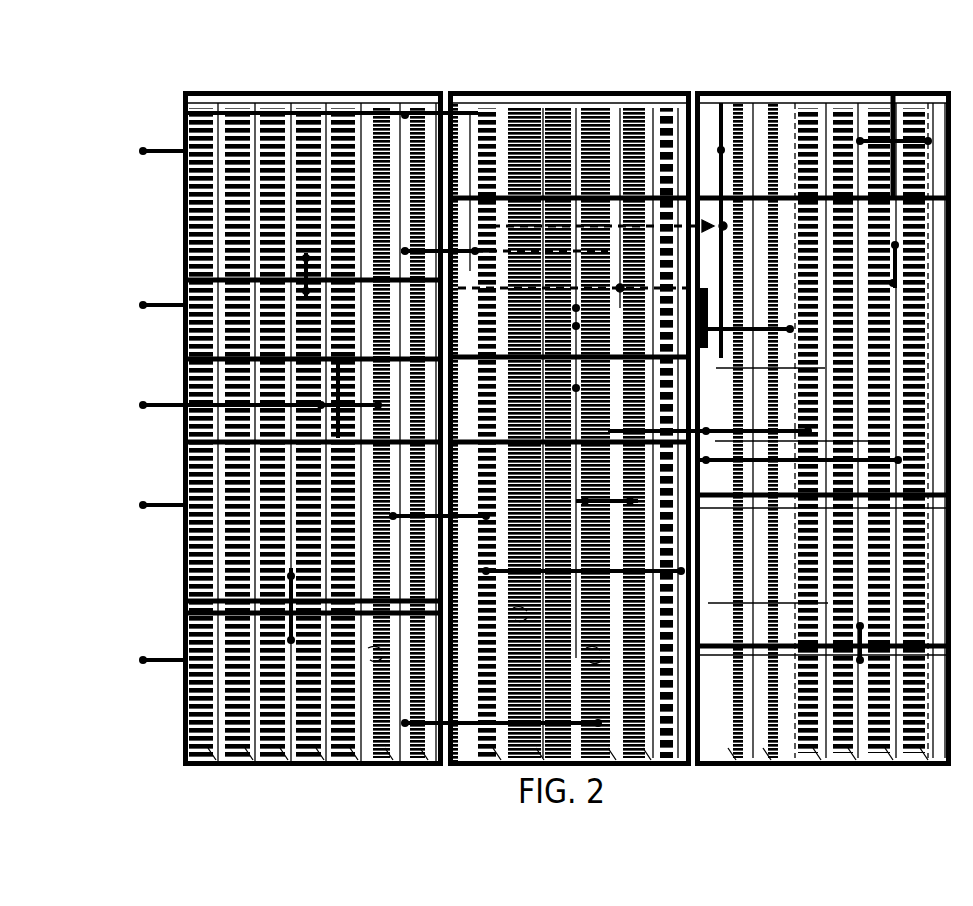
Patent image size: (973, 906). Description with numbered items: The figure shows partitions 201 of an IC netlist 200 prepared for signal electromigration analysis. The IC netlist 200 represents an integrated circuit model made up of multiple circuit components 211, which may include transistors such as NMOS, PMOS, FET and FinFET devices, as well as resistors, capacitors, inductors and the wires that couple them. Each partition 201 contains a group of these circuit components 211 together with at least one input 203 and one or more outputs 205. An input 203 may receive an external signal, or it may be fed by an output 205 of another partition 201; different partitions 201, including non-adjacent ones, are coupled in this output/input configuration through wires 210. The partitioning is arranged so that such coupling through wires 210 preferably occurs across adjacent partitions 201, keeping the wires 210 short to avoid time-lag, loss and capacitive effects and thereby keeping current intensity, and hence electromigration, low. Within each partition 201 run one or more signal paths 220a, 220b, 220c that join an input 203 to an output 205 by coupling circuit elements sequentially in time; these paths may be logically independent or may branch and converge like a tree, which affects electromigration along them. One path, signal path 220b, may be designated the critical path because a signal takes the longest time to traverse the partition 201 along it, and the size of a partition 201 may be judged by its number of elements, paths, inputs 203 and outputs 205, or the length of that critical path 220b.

The IC netlist 200 is at (150, 76).
The partition 201 is at (322, 179).
The input 203 is at (135, 143).
The output 205 is at (397, 107).
The wire 210 is at (465, 105).
The circuit component 211 is at (362, 650).
The signal path 220a is at (622, 222).
The signal path 220b is at (665, 280).
The signal path 220c is at (527, 262).